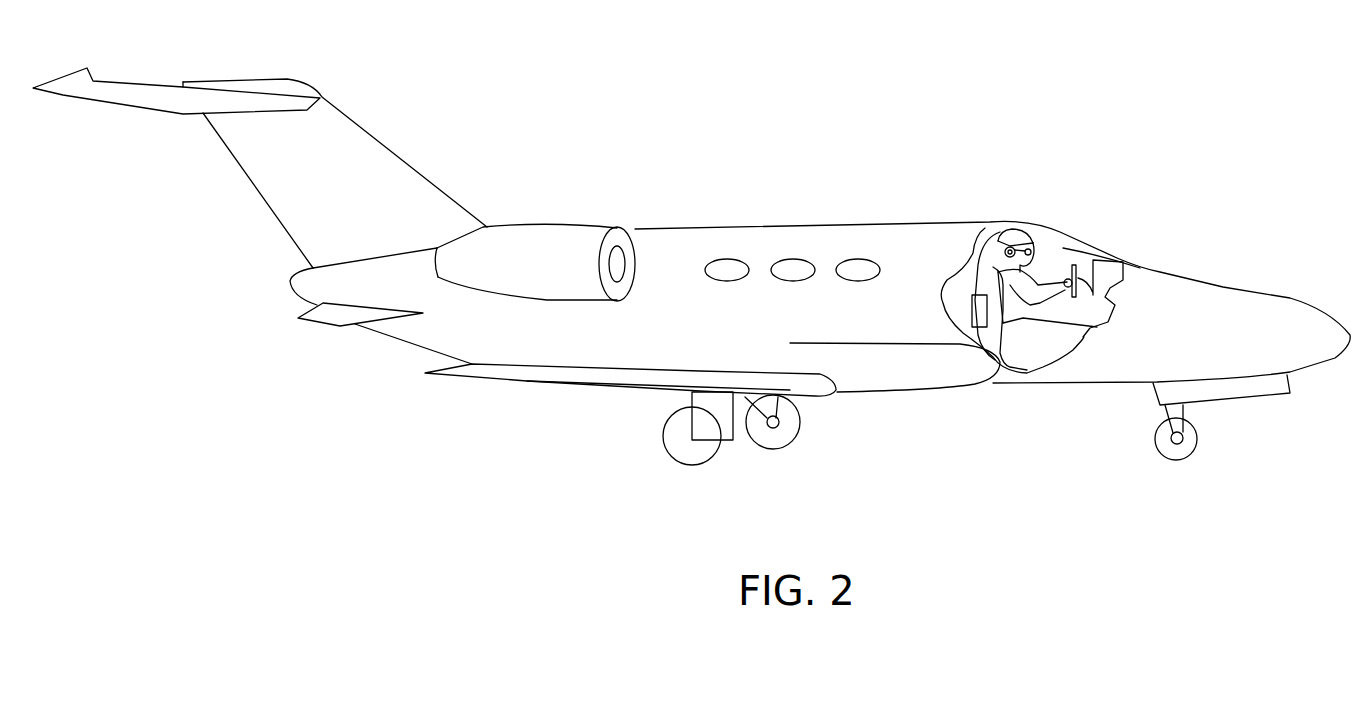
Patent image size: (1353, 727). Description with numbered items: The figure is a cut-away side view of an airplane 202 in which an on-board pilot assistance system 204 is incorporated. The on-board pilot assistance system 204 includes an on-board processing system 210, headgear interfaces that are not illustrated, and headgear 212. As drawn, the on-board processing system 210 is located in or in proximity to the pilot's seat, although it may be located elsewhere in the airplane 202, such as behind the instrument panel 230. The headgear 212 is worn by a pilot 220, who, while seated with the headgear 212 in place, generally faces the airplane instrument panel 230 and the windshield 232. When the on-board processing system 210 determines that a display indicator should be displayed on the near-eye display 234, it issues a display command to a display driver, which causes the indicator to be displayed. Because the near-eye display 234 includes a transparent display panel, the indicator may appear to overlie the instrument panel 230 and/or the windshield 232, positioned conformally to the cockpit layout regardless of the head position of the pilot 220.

The airplane 202 is at (773, 224).
The on-board pilot assistance system 204 is at (1073, 408).
The on-board processing system 210 is at (970, 313).
The headgear 212 is at (1020, 230).
The pilot 220 is at (1023, 320).
The instrument panel 230 is at (1080, 297).
The windshield 232 is at (1107, 252).
The near-eye display 234 is at (1033, 243).